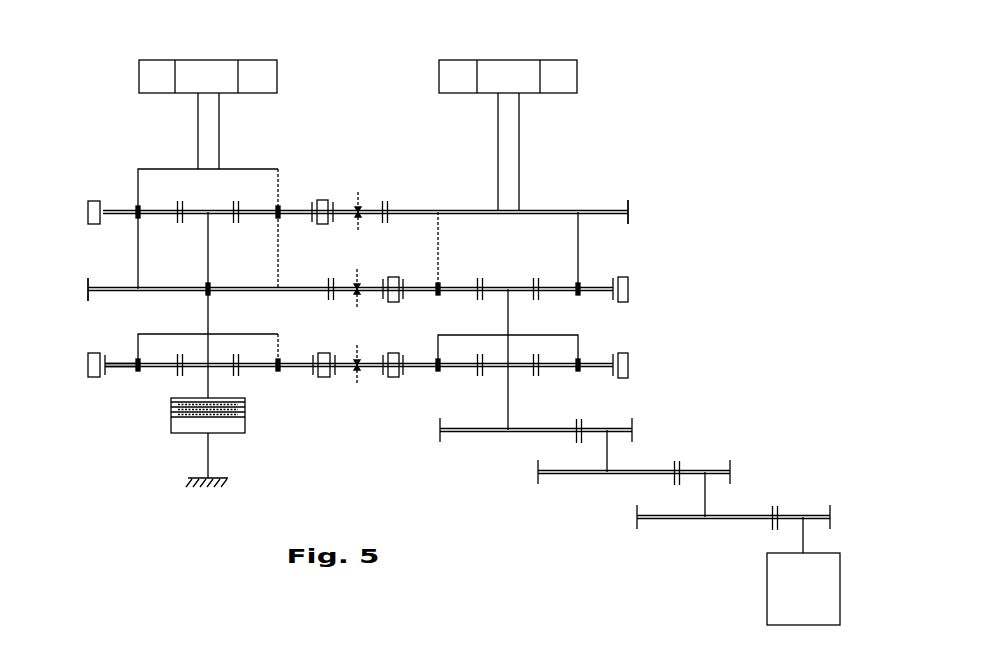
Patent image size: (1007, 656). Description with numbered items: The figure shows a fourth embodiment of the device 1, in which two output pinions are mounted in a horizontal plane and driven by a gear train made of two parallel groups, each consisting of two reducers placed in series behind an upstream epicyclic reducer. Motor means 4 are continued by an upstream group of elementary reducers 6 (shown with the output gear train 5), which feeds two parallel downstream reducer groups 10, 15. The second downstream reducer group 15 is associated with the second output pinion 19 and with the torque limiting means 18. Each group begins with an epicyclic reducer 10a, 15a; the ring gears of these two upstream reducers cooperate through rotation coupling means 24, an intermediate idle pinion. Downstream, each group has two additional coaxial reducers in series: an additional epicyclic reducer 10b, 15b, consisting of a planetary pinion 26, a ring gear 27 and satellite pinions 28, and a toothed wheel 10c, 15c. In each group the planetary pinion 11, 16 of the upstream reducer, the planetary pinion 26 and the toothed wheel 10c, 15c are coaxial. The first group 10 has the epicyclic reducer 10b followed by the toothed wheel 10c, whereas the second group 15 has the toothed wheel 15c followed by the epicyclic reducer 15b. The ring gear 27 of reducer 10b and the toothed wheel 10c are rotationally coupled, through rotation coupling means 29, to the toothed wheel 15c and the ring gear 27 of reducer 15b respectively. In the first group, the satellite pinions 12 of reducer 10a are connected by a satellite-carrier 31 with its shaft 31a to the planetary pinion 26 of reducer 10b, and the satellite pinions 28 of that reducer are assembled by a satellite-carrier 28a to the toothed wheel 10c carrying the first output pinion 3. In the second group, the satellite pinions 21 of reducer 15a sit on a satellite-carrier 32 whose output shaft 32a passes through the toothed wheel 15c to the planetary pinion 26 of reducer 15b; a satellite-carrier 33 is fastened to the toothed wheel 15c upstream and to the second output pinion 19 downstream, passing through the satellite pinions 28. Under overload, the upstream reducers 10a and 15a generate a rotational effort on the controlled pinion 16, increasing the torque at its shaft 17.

The device 1 is at (724, 187).
The first output pinion 3 is at (498, 72).
The motor means 4 is at (785, 583).
The output gear train 5 is at (484, 477).
The upstream group of elementary reducers 6 is at (667, 554).
The first downstream reducer group 10 is at (679, 395).
The epicyclic reducer 10a is at (651, 366).
The additional epicyclic reducer 10b is at (662, 286).
The toothed wheel 10c is at (642, 197).
The planetary pinion 11 is at (517, 372).
The satellite pinions 12 is at (427, 372).
The second downstream reducer group 15 is at (135, 394).
The epicyclic reducer 15a is at (90, 392).
The additional epicyclic reducer 15b is at (83, 212).
The toothed wheel 15c is at (78, 289).
The planetary pinion 16 is at (218, 372).
The shaft 17 is at (208, 372).
The torque limiting means 18 is at (177, 439).
The second output pinion 19 is at (199, 72).
The satellite pinions 21 is at (110, 358).
The rotation coupling means 24 is at (347, 372).
The planetary pinion 26 is at (220, 210).
The ring gear 27 is at (322, 200).
The satellite pinions 28 is at (120, 210).
The satellite-carrier 28a is at (578, 258).
The rotation coupling means 29 is at (345, 210).
The satellite-carrier 31 is at (568, 335).
The shaft 31a is at (507, 318).
The satellite-carrier 32 is at (175, 333).
The output shaft 32a is at (208, 228).
The satellite-carrier 33 is at (212, 138).